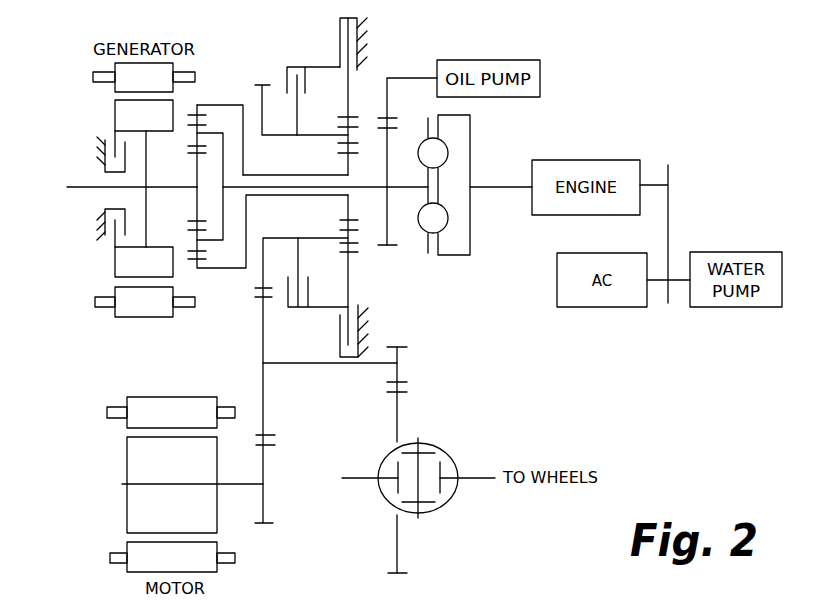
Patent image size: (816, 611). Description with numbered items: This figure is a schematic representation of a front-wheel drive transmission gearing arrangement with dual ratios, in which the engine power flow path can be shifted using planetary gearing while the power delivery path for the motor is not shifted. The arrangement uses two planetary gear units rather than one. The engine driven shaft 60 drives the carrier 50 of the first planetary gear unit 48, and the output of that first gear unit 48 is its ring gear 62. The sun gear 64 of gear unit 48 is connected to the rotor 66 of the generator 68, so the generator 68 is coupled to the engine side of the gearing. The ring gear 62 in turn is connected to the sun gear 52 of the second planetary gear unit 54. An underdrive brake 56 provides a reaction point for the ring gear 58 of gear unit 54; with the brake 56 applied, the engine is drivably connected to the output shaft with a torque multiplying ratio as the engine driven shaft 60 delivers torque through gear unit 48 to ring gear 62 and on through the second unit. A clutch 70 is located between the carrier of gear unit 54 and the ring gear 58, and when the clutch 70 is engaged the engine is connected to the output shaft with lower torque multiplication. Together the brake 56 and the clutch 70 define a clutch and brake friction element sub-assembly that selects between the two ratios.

The first planetary gear unit 48 is at (228, 103).
The carrier 50 is at (225, 130).
The sun gear 52 is at (349, 173).
The second planetary gear unit 54 is at (363, 110).
The underdrive brake 56 is at (364, 323).
The ring gear 58 is at (351, 268).
The engine driven shaft 60 is at (256, 183).
The ring gear 62 is at (199, 100).
The sun gear 64 is at (197, 203).
The rotor 66 is at (127, 115).
The generator 68 is at (127, 85).
The clutch 70 is at (290, 296).